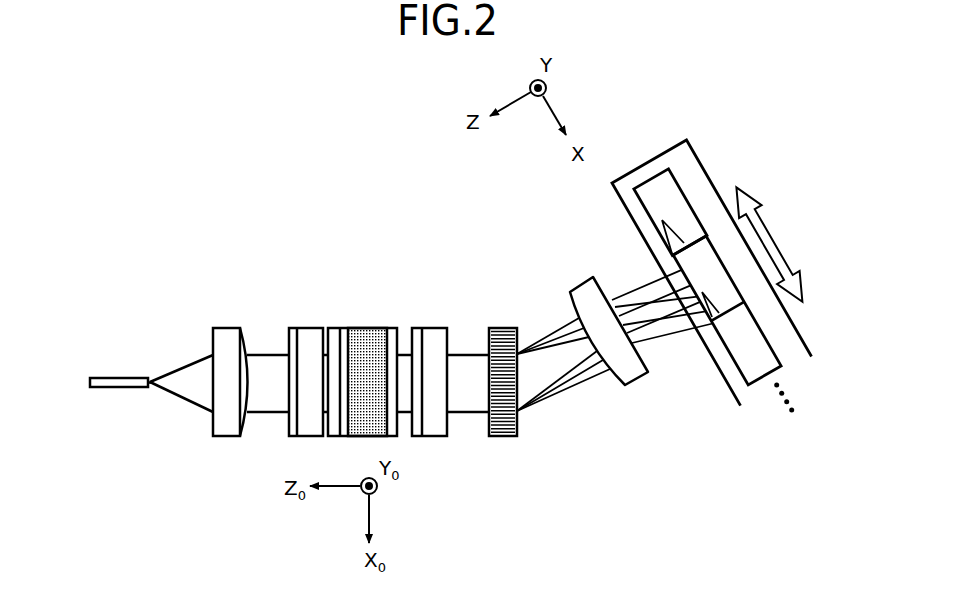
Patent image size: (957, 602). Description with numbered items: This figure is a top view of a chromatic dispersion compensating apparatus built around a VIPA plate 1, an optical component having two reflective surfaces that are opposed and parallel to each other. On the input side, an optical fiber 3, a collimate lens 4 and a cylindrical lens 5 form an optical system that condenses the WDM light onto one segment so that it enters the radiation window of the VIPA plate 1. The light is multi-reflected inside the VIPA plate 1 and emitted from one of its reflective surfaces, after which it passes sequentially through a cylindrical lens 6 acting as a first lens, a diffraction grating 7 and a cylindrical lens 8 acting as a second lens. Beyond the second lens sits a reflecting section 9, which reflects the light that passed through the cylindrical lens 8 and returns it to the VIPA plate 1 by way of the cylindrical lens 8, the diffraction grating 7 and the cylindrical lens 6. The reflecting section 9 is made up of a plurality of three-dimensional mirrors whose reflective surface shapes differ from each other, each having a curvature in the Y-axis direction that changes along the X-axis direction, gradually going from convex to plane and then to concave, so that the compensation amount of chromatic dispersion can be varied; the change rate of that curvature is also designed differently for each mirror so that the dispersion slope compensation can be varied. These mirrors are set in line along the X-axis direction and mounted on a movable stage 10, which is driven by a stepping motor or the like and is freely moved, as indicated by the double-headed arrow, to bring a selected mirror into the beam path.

The VIPA plate 1 is at (366, 327).
The optical fiber 3 is at (126, 377).
The collimate lens 4 is at (228, 327).
The cylindrical lens 5 is at (308, 327).
The cylindrical lens (first lens) 6 is at (431, 327).
The diffraction grating 7 is at (507, 327).
The cylindrical lens (second lens) 8 is at (634, 384).
The reflecting section 9 is at (690, 180).
The movable stage 10 is at (731, 390).